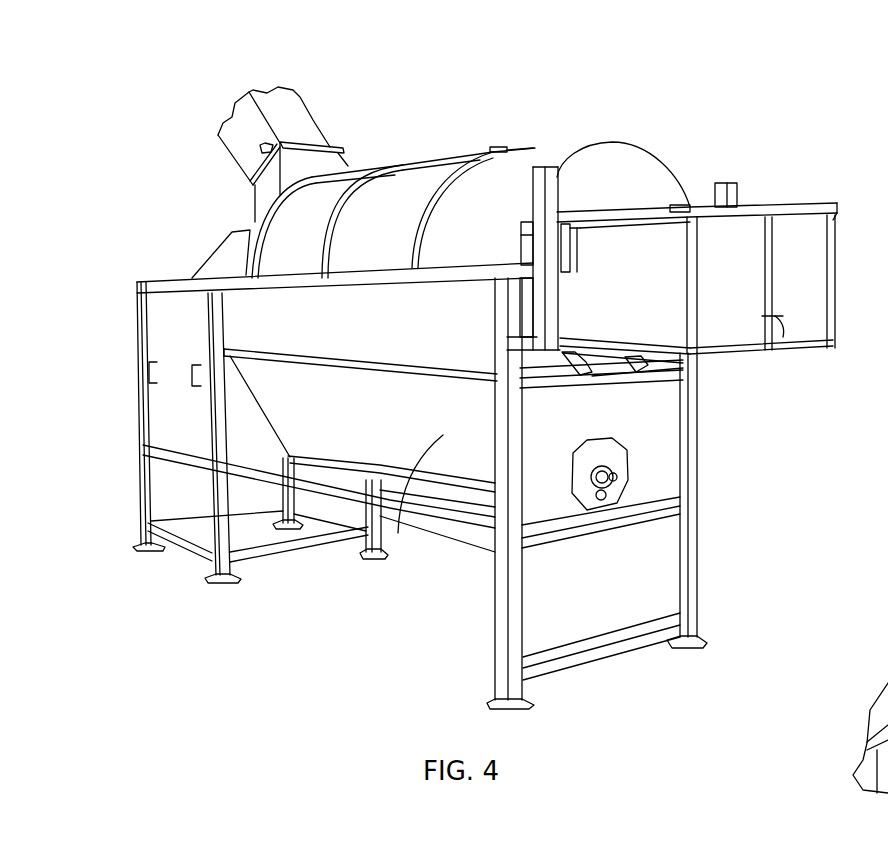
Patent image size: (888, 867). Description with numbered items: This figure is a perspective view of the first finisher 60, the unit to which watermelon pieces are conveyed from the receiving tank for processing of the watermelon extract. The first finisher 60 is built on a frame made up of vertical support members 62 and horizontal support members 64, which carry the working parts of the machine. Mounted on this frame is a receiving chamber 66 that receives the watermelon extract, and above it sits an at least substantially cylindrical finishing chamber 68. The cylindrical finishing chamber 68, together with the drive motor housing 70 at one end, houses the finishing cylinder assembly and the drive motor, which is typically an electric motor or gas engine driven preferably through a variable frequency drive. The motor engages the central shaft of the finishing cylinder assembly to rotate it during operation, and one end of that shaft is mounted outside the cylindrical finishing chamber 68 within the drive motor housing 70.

The first finisher 60 is at (740, 135).
The vertical support members 62 is at (142, 474).
The horizontal support members 64 is at (189, 548).
The receiving chamber 66 is at (360, 454).
The cylindrical finishing chamber 68 is at (554, 140).
The drive motor housing 70 is at (822, 255).